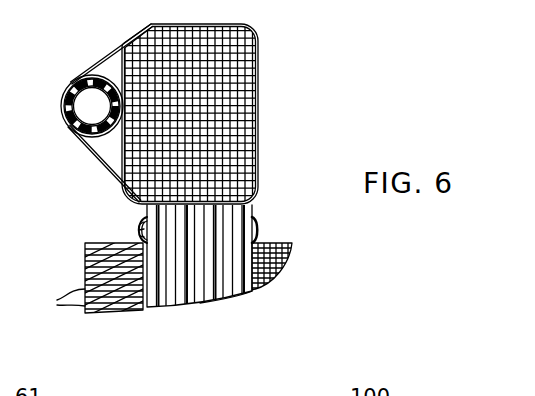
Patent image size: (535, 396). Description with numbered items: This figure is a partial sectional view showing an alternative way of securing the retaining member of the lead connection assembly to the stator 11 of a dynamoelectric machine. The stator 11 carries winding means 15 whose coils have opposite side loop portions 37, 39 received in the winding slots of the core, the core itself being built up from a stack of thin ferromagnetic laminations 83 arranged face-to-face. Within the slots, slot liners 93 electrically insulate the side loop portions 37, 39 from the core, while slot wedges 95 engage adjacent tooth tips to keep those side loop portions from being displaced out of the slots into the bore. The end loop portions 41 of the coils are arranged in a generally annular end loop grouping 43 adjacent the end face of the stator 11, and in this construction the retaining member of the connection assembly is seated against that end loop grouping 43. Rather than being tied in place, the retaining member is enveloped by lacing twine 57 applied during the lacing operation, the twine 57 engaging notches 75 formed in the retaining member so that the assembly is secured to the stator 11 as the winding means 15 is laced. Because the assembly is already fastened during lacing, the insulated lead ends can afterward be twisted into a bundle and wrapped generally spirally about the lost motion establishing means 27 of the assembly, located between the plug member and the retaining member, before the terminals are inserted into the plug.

The stator 11 is at (279, 231).
The winding means 15 is at (250, 302).
The establishing means 27 is at (64, 114).
The side loop portion 37 is at (203, 275).
The side loop portion 39 is at (187, 268).
The end loop portion 41 is at (242, 125).
The end loop grouping 43 is at (252, 46).
The lacing twine 57 is at (104, 59).
The notches 75 is at (104, 148).
The laminations 83 is at (60, 301).
The slot liners 93 is at (138, 228).
The slot wedges 95 is at (258, 227).